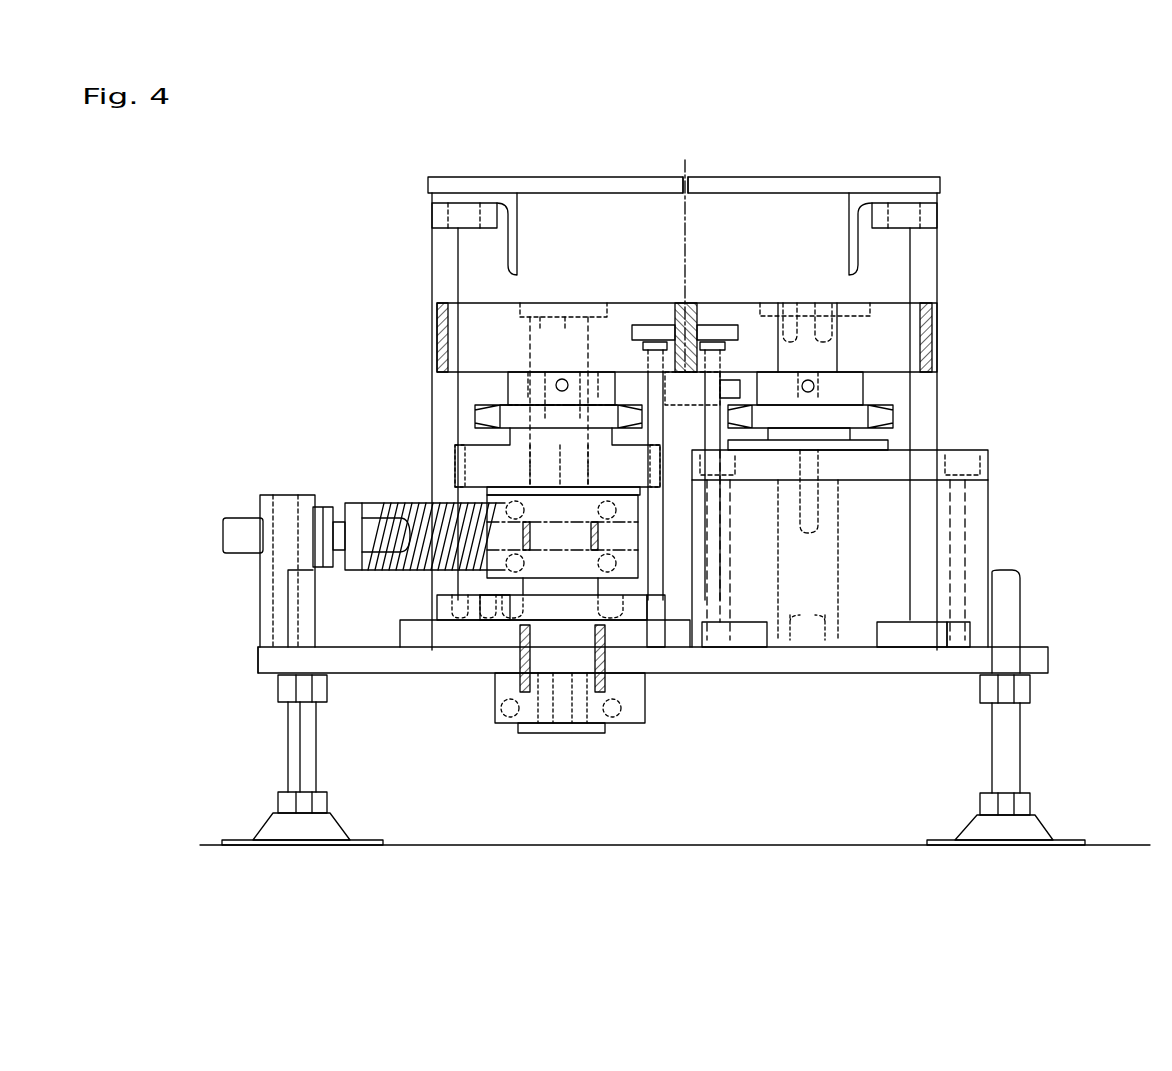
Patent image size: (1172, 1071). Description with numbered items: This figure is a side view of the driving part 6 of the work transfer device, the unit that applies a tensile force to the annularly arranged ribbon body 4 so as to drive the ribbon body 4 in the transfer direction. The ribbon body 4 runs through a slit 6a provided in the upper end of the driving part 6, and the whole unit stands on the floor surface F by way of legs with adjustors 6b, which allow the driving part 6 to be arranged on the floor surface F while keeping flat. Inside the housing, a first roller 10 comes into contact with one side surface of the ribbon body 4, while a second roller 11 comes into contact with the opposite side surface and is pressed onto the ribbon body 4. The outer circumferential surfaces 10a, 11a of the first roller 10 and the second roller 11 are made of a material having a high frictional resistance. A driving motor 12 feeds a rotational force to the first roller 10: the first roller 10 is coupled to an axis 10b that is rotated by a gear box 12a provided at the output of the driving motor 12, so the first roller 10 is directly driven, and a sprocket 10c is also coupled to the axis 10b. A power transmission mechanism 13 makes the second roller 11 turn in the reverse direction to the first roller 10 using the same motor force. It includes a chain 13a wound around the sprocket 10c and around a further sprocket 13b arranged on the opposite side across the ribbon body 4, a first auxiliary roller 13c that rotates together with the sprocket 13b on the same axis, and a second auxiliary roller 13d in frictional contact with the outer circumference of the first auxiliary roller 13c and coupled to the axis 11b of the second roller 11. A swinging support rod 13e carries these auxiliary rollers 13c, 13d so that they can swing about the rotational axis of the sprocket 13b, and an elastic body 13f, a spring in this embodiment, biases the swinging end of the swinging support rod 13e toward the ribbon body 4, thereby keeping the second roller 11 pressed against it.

The ribbon body 4 is at (685, 260).
The driving part 6 is at (1030, 187).
The slit 6a is at (695, 177).
The leg with adjustor 6b is at (290, 743).
The first roller 10 is at (691, 413).
The surface of the first roller 10a is at (933, 332).
The axis 10b is at (838, 333).
The sprocket 10c is at (860, 393).
The second roller 11 is at (455, 342).
The surface of the second roller 11a is at (448, 327).
The axis of the second roller 11b is at (530, 327).
The driving motor 12 is at (905, 548).
The gear box 12a is at (887, 523).
The power transmission mechanism 13 is at (423, 476).
The chain 13a is at (488, 403).
The sprocket 13b is at (480, 418).
The first auxiliary roller 13c is at (482, 455).
The second auxiliary roller 13d is at (563, 491).
The swinging support rod 13e is at (487, 495).
The elastic body 13f is at (380, 503).
The floor surface F is at (650, 845).